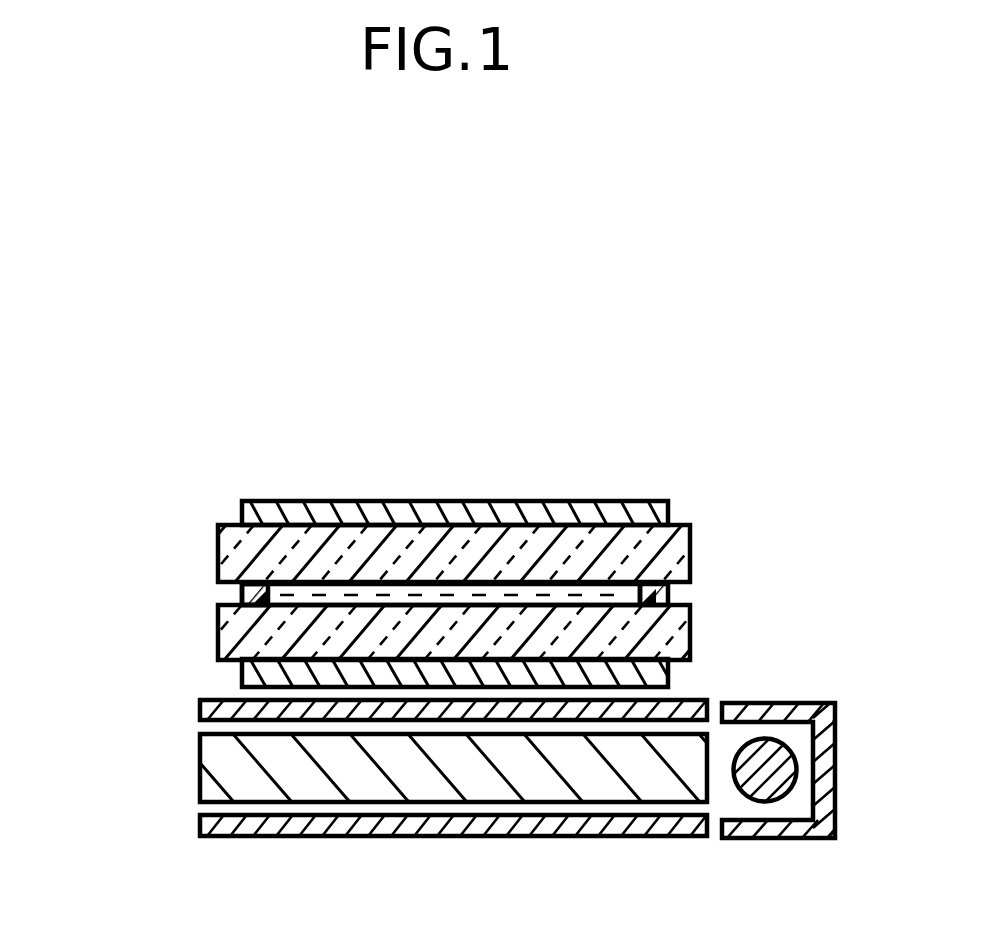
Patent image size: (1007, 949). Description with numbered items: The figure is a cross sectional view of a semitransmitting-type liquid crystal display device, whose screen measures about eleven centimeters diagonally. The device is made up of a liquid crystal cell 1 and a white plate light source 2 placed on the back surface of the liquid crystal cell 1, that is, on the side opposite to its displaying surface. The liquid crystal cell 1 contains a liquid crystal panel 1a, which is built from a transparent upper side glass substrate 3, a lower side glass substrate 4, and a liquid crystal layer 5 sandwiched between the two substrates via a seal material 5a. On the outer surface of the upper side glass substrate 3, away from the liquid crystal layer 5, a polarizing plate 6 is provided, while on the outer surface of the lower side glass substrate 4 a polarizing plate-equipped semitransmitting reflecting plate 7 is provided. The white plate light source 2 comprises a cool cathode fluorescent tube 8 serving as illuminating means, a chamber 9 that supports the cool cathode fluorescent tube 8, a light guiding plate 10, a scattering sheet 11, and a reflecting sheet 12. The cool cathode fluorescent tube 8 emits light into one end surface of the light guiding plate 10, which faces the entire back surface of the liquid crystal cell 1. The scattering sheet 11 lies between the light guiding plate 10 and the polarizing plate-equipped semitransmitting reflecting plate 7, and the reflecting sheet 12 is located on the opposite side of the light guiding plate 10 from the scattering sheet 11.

The liquid crystal cell 1 is at (88, 503).
The liquid crystal panel 1a is at (175, 520).
The white plate light source 2 is at (175, 700).
The upper side glass substrate 3 is at (670, 553).
The lower side glass substrate 4 is at (677, 630).
The liquid crystal layer 5 is at (542, 597).
The seal material 5a is at (230, 579).
The polarizing plate 6 is at (625, 511).
The polarizing plate-equipped semitransmitting reflecting plate 7 is at (668, 677).
The cool cathode fluorescent tube 8 is at (773, 758).
The chamber 9 is at (827, 790).
The light guiding plate 10 is at (563, 787).
The scattering sheet 11 is at (692, 703).
The reflecting sheet 12 is at (492, 837).